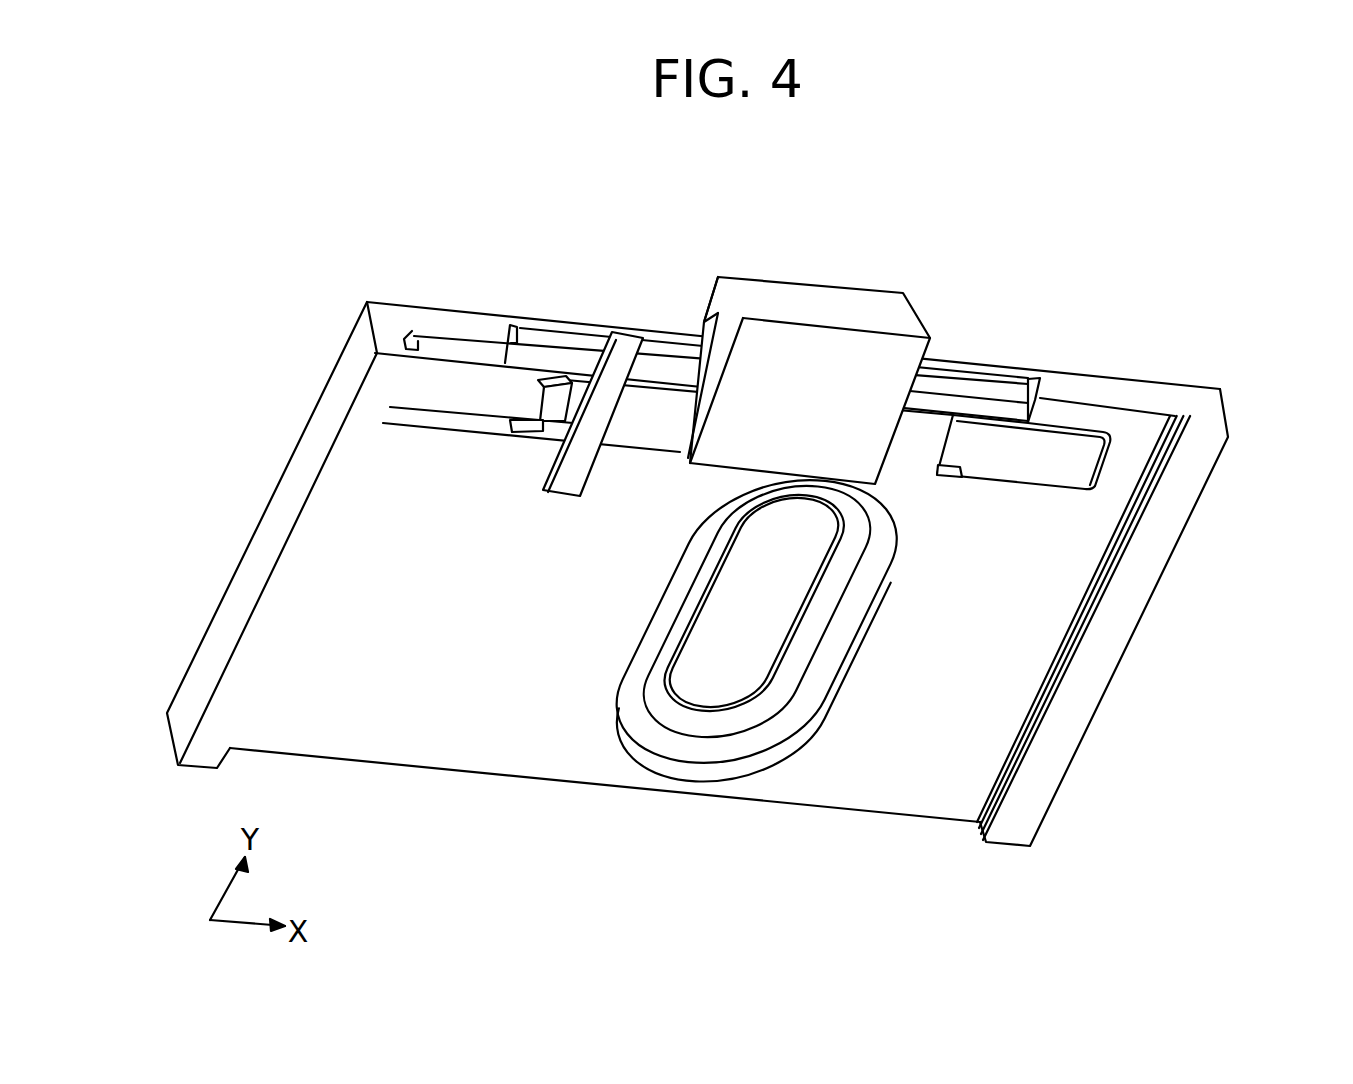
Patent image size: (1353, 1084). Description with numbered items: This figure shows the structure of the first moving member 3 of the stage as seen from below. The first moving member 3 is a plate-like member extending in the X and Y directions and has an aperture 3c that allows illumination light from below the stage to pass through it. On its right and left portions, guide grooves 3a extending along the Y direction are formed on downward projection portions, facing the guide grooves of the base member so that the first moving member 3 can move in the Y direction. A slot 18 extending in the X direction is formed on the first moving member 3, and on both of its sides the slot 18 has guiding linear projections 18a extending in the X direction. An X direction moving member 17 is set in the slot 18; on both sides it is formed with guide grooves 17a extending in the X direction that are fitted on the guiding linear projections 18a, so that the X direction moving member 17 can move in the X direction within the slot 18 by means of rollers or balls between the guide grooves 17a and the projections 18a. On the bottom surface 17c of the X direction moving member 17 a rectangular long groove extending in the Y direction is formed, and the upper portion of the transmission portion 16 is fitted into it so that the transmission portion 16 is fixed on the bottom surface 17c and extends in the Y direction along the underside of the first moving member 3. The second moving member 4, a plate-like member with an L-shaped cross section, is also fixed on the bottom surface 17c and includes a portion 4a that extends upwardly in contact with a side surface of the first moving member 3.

The first moving member 3 is at (460, 743).
The guide groove 3a is at (426, 336).
The aperture 3c is at (720, 693).
The second moving member 4 is at (853, 288).
The upwardly extending portion 4a is at (722, 311).
The transmission portion 16 is at (624, 357).
The X direction moving member 17 is at (643, 436).
The guide groove 17a is at (548, 376).
The bottom surface 17c is at (659, 398).
The slot 18 is at (1066, 438).
The guiding linear projection 18a is at (517, 418).